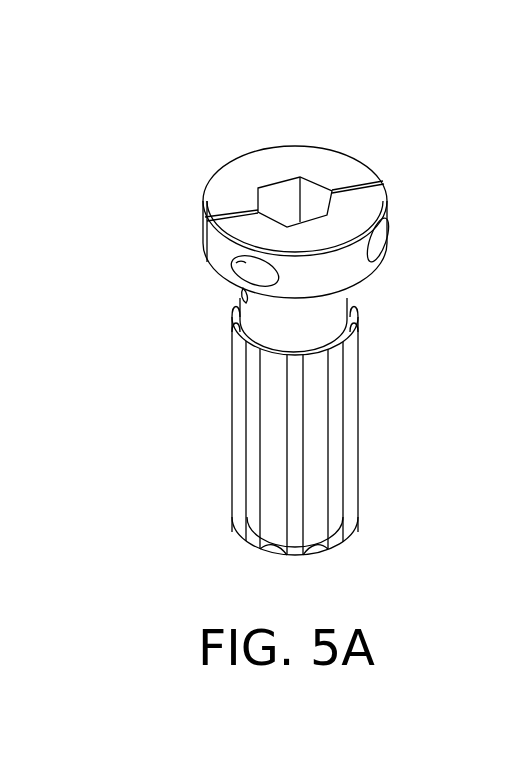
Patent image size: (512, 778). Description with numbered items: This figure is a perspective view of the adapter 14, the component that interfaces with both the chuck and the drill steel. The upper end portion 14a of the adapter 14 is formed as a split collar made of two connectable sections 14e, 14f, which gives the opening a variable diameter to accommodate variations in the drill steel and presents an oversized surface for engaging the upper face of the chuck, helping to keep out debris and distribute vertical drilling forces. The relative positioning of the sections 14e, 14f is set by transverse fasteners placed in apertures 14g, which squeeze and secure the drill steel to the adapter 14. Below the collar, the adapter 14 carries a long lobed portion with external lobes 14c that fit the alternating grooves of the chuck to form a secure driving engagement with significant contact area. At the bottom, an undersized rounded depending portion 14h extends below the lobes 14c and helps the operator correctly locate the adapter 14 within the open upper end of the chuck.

The adapter 14 is at (374, 118).
The upper end portion 14a is at (170, 229).
The external projections or lobes 14c is at (238, 413).
The connectable section 14e is at (245, 176).
The connectable section 14f is at (370, 202).
The apertures 14g is at (250, 268).
The rounded depending portion 14h is at (298, 550).